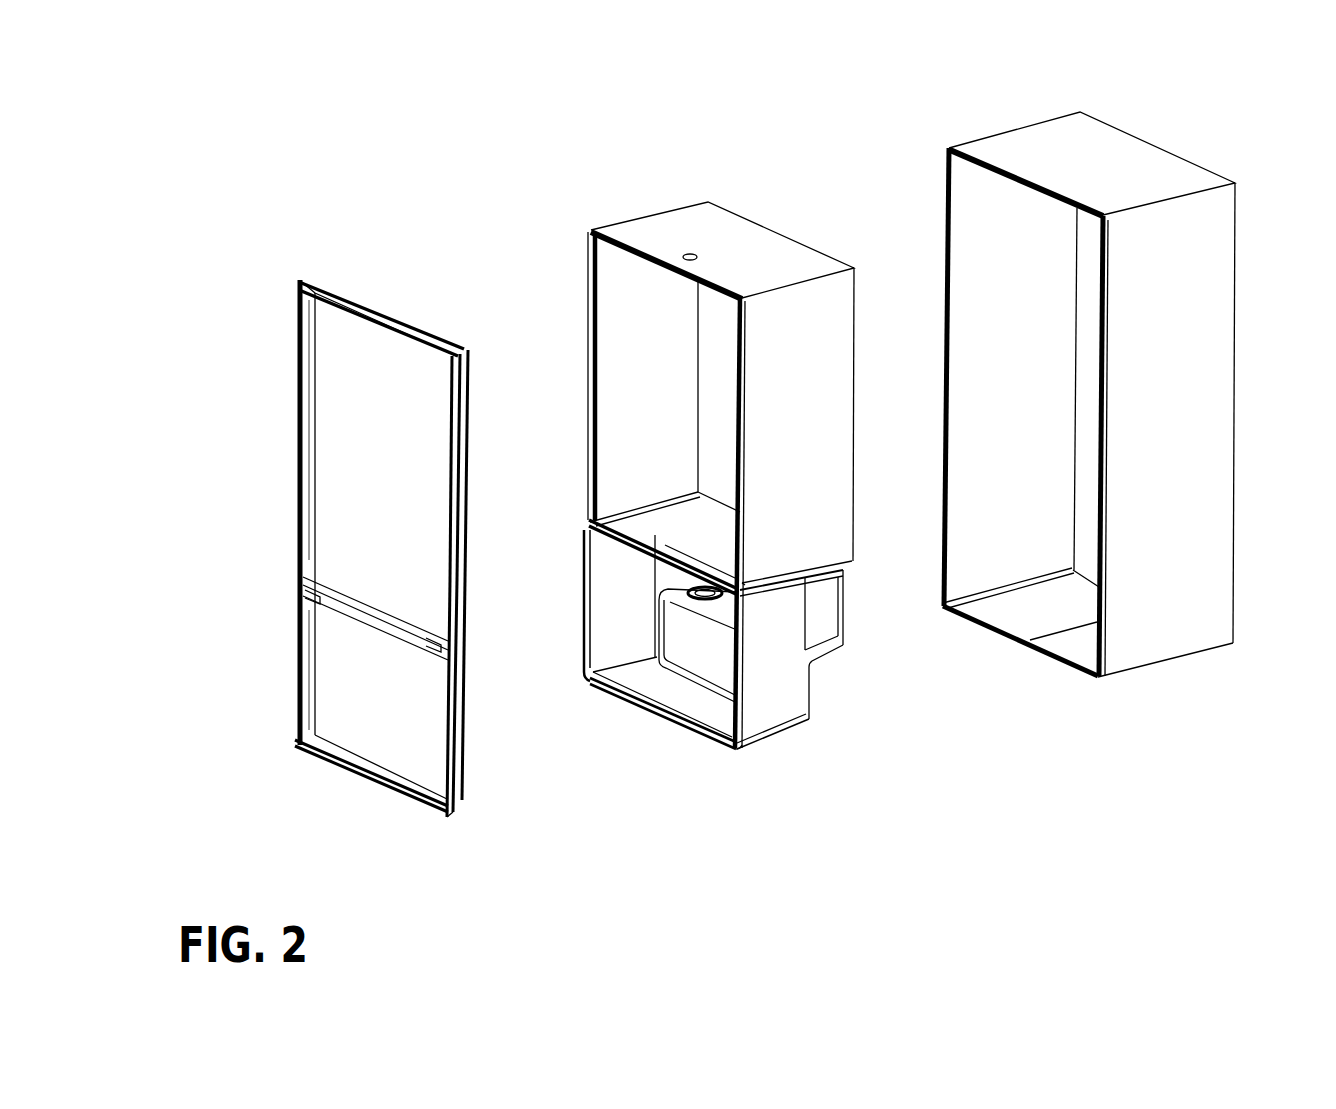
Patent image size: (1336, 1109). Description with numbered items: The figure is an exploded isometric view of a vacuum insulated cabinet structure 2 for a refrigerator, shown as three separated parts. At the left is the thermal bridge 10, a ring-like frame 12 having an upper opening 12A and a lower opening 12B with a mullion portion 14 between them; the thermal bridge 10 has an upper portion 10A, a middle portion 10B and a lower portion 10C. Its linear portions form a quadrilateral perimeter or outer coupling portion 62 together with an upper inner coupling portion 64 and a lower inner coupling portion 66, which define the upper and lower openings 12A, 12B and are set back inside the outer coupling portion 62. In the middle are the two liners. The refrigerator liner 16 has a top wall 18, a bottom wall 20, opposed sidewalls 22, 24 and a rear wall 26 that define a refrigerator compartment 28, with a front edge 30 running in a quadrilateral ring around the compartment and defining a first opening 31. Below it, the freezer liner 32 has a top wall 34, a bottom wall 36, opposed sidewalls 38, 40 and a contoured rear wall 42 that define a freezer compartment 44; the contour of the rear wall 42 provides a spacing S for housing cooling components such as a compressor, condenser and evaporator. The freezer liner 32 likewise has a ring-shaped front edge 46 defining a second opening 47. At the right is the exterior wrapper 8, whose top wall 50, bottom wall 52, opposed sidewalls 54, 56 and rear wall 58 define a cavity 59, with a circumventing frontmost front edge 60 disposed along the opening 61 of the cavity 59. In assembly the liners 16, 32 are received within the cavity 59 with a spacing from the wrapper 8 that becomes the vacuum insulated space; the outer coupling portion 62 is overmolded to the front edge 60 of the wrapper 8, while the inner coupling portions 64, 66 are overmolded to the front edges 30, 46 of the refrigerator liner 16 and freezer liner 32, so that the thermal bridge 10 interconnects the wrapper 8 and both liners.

The vacuum insulated cabinet structure 2 is at (332, 140).
The exterior wrapper 8 is at (987, 128).
The thermal bridge 10 is at (260, 328).
The upper portion 10A is at (432, 322).
The middle portion 10B is at (292, 585).
The lower portion 10C is at (306, 760).
The frame 12 is at (265, 392).
The upper opening 12A is at (294, 490).
The lower opening 12B is at (292, 690).
The mullion portion 14 is at (357, 618).
The refrigerator liner 16 is at (608, 216).
The top wall 18 is at (755, 245).
The bottom wall 20 is at (648, 524).
The sidewall 22 is at (622, 425).
The sidewall 24 is at (836, 392).
The rear wall 26 is at (731, 318).
The refrigerator compartment 28 is at (675, 398).
The front edge 30 is at (630, 252).
The first opening 31 is at (584, 281).
The freezer liner 32 is at (768, 752).
The top wall 34 is at (836, 568).
The bottom wall 36 is at (640, 688).
The sidewall 38 is at (618, 600).
The sidewall 40 is at (766, 715).
The rear wall 42 is at (726, 652).
The freezer compartment 44 is at (692, 652).
The front edge 46 is at (708, 740).
The second opening 47 is at (718, 752).
The top wall 50 is at (1107, 148).
The bottom wall 52 is at (1078, 653).
The sidewall 54 is at (968, 193).
The sidewall 56 is at (1200, 520).
The rear wall 58 is at (1092, 352).
The cavity 59 is at (1037, 422).
The front edge 60 is at (1006, 170).
The opening 61 is at (940, 457).
The outer coupling portion 62 is at (299, 280).
The upper inner coupling portion 64 is at (354, 292).
The lower inner coupling portion 66 is at (462, 776).
The spacing S is at (817, 682).